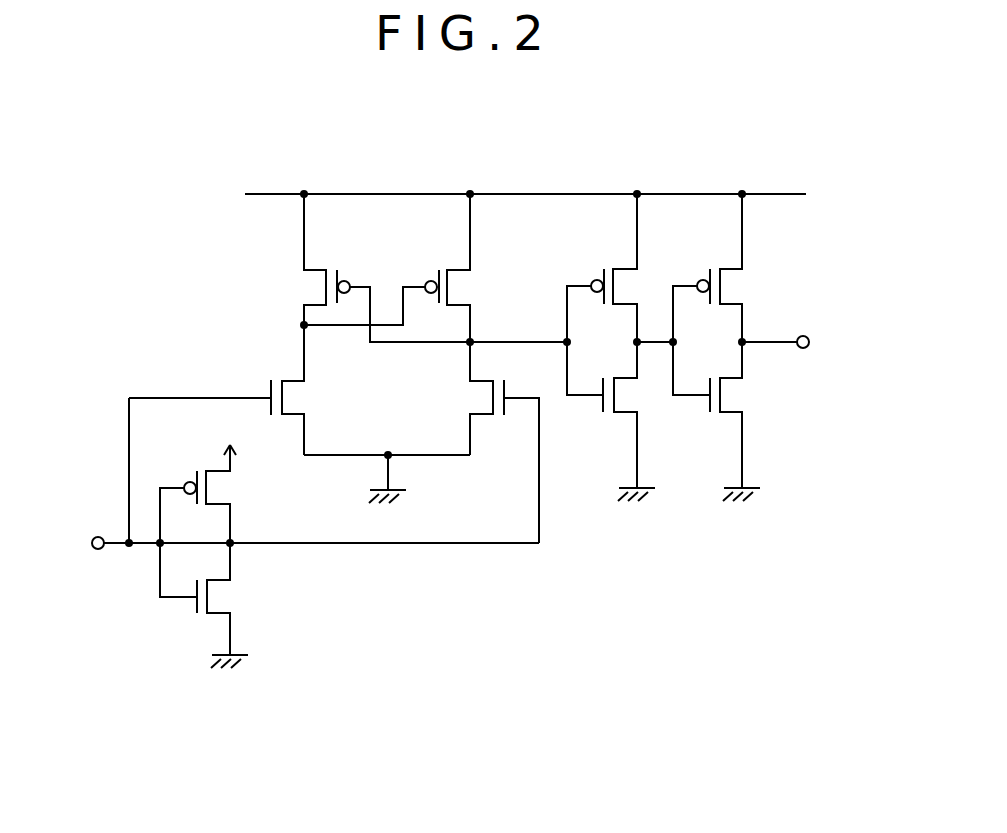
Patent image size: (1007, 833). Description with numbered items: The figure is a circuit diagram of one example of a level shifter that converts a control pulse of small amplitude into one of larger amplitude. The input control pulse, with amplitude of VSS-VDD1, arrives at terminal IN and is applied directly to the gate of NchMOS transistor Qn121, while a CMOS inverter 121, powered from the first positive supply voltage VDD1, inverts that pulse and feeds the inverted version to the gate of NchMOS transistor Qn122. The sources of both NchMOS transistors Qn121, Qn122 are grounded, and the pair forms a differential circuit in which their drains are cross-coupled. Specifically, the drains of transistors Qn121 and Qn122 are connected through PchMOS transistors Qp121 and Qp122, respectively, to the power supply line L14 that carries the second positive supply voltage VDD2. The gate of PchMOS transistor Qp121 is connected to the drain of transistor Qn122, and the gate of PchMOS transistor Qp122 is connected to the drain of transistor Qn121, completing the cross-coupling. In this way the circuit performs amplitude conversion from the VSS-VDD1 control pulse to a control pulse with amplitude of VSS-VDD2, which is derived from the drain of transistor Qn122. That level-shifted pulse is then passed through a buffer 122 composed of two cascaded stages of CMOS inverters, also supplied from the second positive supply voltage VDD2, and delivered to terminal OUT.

The CMOS inverter 121 is at (157, 656).
The buffer 122 is at (802, 269).
The power supply line L14 is at (395, 193).
The PchMOS transistor Qp121 is at (359, 268).
The PchMOS transistor Qp122 is at (415, 269).
The NchMOS transistor Qn121 is at (245, 390).
The NchMOS transistor Qn122 is at (475, 442).
The first positive supply voltage VDD1 is at (231, 441).
The second positive supply voltage VDD2 is at (525, 183).
The input terminal IN is at (96, 543).
The output terminal OUT is at (800, 342).